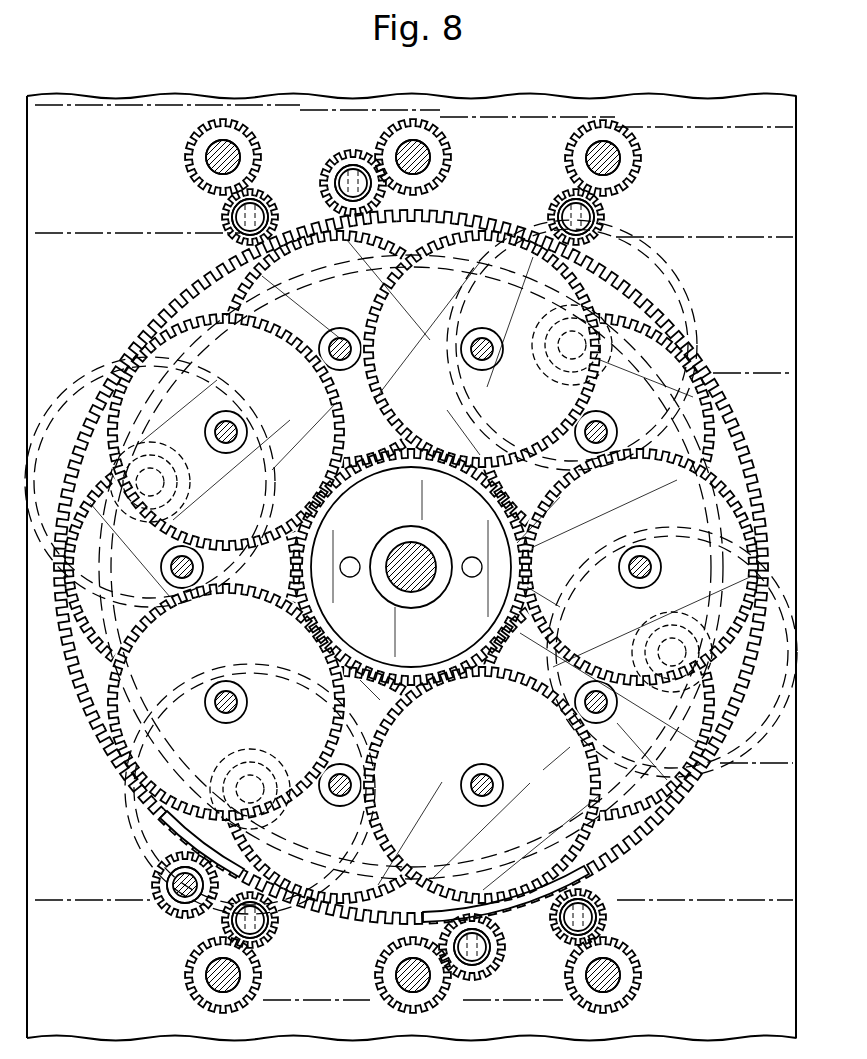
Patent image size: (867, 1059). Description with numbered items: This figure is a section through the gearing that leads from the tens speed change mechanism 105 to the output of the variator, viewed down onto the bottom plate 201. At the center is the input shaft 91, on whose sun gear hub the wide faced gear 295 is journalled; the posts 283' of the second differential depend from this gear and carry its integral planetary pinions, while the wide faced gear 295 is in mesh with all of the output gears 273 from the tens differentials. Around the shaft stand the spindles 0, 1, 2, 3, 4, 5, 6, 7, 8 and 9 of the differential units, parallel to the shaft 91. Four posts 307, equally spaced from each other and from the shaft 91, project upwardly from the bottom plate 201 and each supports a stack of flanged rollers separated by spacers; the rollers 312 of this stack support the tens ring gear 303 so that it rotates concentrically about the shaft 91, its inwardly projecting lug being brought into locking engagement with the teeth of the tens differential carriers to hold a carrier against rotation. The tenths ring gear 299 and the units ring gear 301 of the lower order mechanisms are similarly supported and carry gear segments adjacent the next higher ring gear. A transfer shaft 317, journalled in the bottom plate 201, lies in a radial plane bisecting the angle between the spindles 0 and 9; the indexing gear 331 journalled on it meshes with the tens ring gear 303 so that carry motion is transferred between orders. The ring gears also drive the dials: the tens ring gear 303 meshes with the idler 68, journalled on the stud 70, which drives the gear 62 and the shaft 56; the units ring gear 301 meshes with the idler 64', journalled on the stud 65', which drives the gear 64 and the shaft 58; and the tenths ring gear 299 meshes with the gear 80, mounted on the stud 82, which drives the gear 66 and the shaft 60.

The bottom plate 201 is at (668, 110).
The speed change mechanism 105 is at (683, 291).
The tens ring gear 303 is at (718, 418).
The units ring gear 301 is at (187, 828).
The tenths ring gear 299 is at (583, 870).
The flanged rollers 312 is at (560, 315).
The posts 307 is at (576, 372).
The spindle 0 is at (243, 692).
The spindle 1 is at (177, 560).
The spindle 2 is at (236, 440).
The spindle 3 is at (342, 342).
The spindle 4 is at (480, 340).
The spindle 5 is at (597, 422).
The spindle 6 is at (642, 566).
The spindle 7 is at (617, 702).
The spindle 8 is at (500, 777).
The spindle 9 is at (350, 795).
The wide faced gear 295 is at (386, 628).
The input shaft 91 is at (409, 557).
The posts 283' is at (412, 571).
The output gears 273 is at (320, 322).
The shaft 60 is at (206, 152).
The gear 66 is at (193, 154).
The shaft 58 is at (431, 152).
The gear 64 is at (414, 570).
The shaft 56 is at (621, 158).
The gear 62 is at (623, 173).
The gear 80 is at (227, 221).
The stud 82 is at (233, 213).
The idler 68 is at (604, 223).
The stud 70 is at (592, 211).
The stud 65' is at (420, 559).
The idler 64' is at (439, 547).
The indexing gear 331 is at (157, 885).
The transfer shaft 317 is at (173, 880).